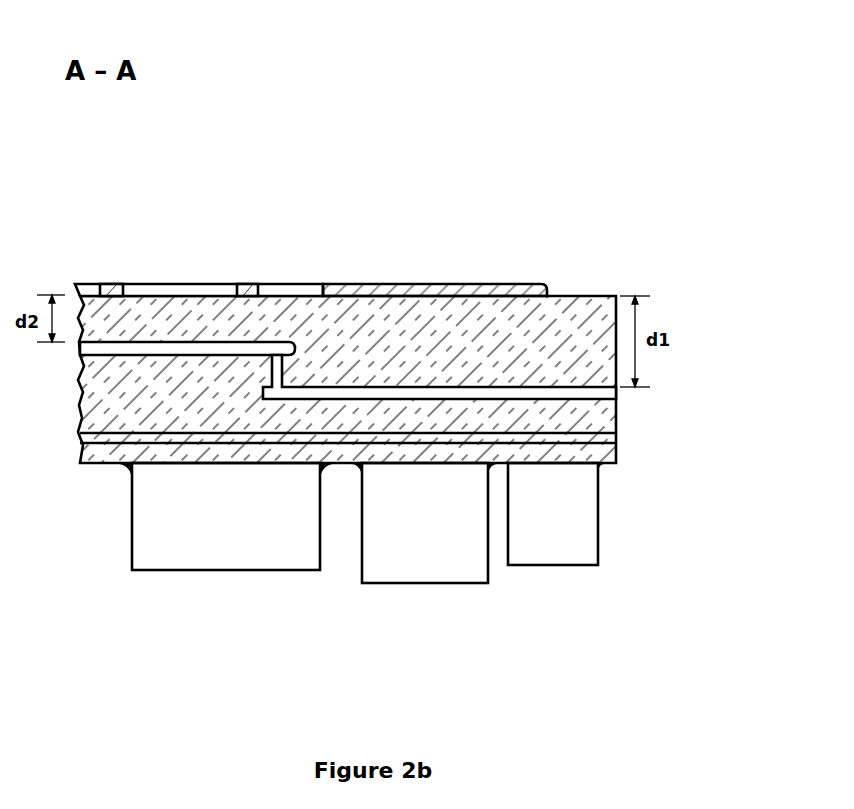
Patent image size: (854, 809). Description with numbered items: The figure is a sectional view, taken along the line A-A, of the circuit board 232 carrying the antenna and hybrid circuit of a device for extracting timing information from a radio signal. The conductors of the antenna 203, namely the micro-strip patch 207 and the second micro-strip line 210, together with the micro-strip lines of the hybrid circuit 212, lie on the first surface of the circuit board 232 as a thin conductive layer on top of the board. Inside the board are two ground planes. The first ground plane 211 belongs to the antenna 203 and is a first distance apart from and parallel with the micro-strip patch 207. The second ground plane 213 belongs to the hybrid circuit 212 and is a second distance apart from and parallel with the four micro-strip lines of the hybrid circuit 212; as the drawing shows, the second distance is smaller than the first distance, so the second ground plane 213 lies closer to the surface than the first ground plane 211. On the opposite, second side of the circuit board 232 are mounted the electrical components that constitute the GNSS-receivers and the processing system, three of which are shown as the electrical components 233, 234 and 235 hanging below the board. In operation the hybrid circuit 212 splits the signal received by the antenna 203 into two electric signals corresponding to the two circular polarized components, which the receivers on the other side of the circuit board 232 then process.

The antenna 203 is at (311, 232).
The micro-strip patch 207 is at (435, 267).
The second micro-strip line 210 is at (290, 284).
The first ground plane 211 is at (616, 393).
The hybrid circuit 212 is at (95, 280).
The second ground plane 213 is at (78, 348).
The circuit board 232 is at (710, 275).
The electrical component 233 is at (190, 570).
The electrical component 234 is at (390, 583).
The electrical component 235 is at (543, 565).